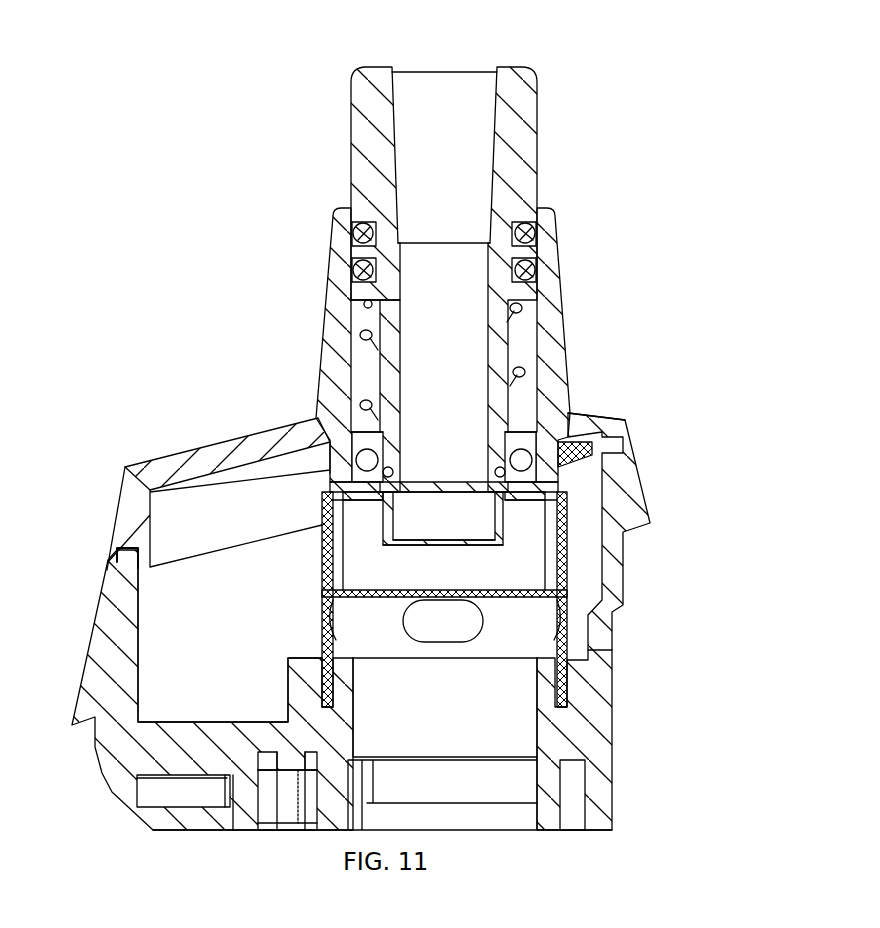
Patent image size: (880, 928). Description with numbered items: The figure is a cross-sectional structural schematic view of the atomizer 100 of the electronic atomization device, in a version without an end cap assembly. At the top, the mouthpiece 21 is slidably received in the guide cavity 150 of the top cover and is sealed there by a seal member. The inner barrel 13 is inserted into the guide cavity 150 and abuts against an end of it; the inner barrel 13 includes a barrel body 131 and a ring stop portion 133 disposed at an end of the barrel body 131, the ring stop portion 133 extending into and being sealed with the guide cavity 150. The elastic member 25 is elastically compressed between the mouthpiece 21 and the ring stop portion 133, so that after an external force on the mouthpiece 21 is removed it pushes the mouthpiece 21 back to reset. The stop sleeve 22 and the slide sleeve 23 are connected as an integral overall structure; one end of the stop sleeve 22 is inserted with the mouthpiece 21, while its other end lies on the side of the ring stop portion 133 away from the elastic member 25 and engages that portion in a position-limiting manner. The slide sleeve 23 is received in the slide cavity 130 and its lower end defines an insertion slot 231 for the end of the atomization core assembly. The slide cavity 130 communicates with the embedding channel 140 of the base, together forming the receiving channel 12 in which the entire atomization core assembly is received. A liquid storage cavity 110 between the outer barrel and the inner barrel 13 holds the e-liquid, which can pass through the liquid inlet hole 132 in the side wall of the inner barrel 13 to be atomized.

The atomizer 100 is at (465, 34).
The mouthpiece 21 is at (530, 175).
The stop sleeve 22 is at (498, 410).
The elastic member 25 is at (515, 372).
The inner barrel 13 is at (333, 466).
The ring stop portion 133 is at (320, 517).
The barrel body 131 is at (240, 558).
The receiving channel 12 is at (388, 621).
The liquid inlet hole 132 is at (117, 565).
The liquid storage cavity 110 is at (343, 618).
The slide cavity 130 is at (440, 648).
The embedding channel 140 is at (430, 685).
The slide sleeve 23 is at (525, 599).
The insertion slot 231 is at (530, 540).
The guide cavity 150 is at (367, 372).